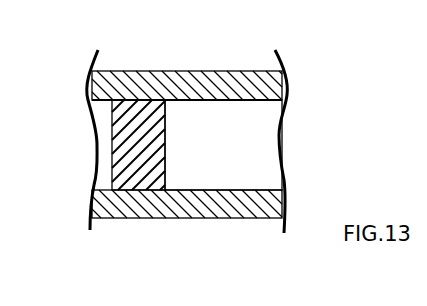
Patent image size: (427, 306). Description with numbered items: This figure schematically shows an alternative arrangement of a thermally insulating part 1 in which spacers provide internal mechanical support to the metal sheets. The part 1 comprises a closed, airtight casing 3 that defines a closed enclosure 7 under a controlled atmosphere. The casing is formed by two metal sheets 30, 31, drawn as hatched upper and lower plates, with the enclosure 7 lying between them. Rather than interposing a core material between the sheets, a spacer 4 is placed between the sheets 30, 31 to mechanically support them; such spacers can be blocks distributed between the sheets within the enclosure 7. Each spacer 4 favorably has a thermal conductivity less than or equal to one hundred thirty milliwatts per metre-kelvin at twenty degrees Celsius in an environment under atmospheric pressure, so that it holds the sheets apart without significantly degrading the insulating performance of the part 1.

The thermally insulating part 1 is at (135, 58).
The closed, airtight casing 3 is at (80, 149).
The spacer 4 is at (135, 168).
The closed enclosure 7 is at (238, 152).
The sheet 30 is at (231, 84).
The sheet 31 is at (240, 210).